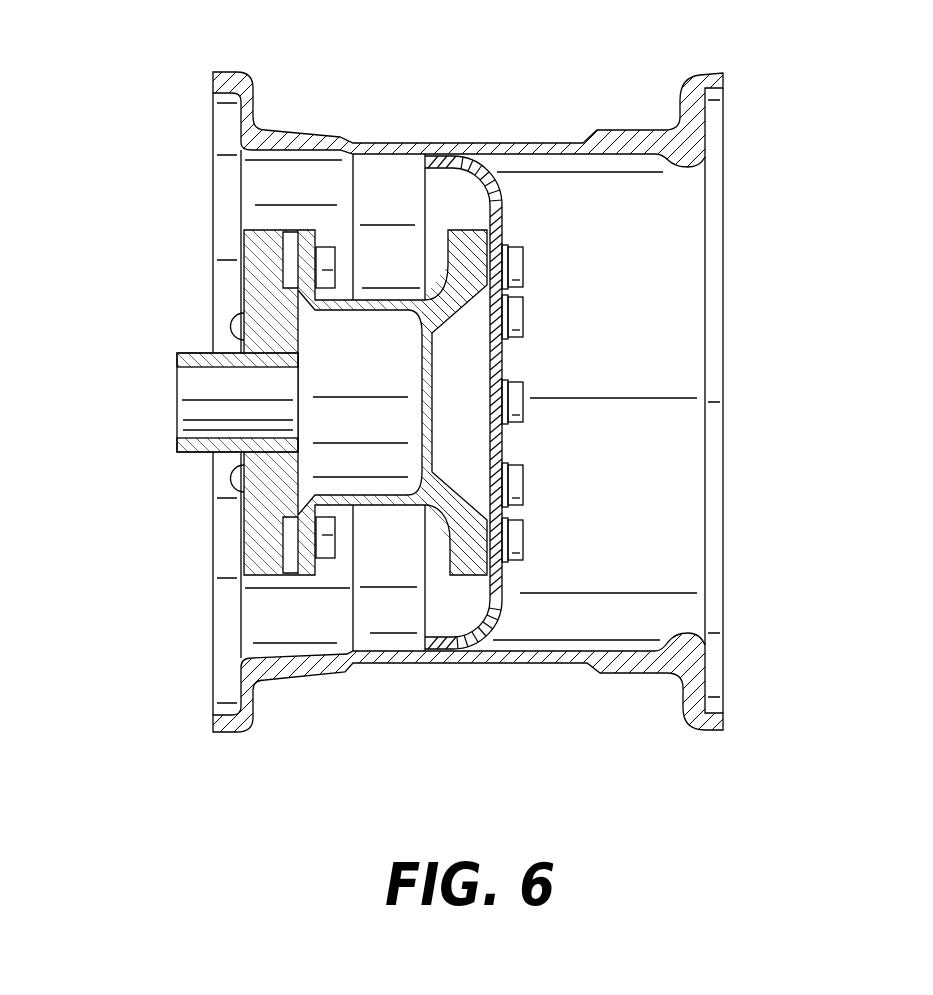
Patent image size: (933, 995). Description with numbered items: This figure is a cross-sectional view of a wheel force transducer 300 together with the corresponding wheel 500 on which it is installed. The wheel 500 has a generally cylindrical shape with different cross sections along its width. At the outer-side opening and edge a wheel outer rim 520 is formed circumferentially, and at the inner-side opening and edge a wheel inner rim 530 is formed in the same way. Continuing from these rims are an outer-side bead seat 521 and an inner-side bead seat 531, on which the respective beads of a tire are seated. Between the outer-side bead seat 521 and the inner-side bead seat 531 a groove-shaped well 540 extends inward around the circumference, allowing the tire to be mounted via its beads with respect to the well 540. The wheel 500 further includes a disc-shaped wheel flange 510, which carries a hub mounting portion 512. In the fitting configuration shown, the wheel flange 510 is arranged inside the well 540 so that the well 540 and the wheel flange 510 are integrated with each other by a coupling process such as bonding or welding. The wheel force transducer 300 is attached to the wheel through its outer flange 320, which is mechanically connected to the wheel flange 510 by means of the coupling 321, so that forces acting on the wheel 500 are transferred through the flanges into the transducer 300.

The wheel 500 is at (580, 130).
The wheel flange 510 is at (500, 194).
The wheel outer rim 520 is at (710, 730).
The outer-side bead seat 521 is at (647, 677).
The wheel inner rim 530 is at (228, 732).
The inner-side bead seat 531 is at (290, 677).
The well 540 is at (467, 143).
The wheel force transducer 300 is at (378, 517).
The outer flange 320 is at (450, 230).
The coupling 321 is at (523, 260).
The hub mounting portion 512 is at (520, 311).